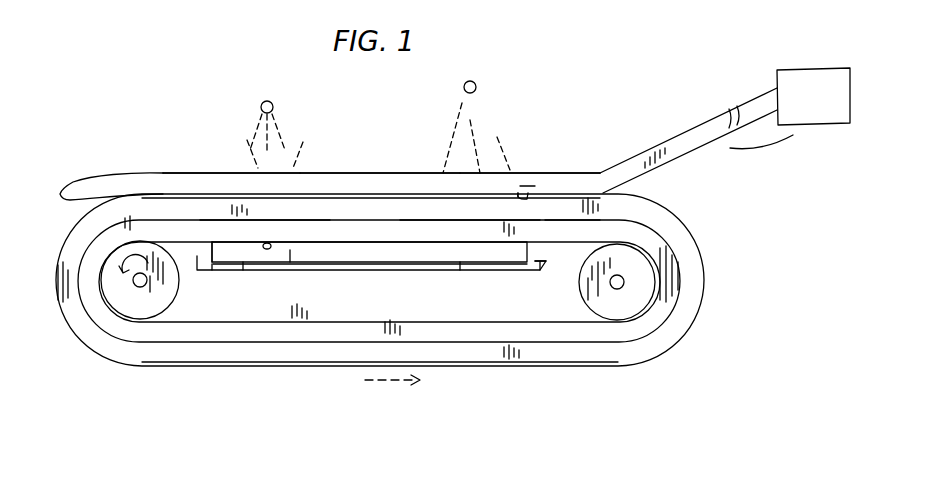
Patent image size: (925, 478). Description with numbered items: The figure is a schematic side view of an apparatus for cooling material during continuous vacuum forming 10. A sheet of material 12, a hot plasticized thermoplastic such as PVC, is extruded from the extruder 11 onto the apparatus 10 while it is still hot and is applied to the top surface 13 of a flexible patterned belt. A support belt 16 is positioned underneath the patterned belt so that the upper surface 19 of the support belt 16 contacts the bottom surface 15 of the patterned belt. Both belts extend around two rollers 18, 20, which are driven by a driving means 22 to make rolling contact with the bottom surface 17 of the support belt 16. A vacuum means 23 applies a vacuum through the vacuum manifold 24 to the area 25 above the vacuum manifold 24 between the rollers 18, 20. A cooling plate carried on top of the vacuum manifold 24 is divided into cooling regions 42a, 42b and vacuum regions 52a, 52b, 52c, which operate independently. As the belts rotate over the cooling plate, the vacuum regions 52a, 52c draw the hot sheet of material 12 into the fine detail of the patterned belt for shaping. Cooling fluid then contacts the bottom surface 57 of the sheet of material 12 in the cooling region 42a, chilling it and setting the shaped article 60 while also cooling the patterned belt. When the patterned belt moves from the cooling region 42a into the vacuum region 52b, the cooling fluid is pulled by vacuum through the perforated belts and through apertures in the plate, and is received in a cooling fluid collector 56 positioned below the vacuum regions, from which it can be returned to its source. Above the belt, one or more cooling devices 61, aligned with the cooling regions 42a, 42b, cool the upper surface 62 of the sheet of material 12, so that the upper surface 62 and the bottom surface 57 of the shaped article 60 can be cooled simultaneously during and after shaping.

The apparatus for cooling material during continuous vacuum forming 10 is at (110, 52).
The extruder 11 is at (803, 70).
The sheet of material 12 is at (683, 127).
The top surface of flexible patterned belt 13 is at (378, 138).
The bottom surface of flexible patterned belt 15 is at (237, 243).
The support belt 16 is at (122, 328).
The bottom surface of support belt 17 is at (198, 257).
The roller 18 is at (152, 305).
The upper surface of support belt 19 is at (557, 218).
The roller 20 is at (640, 300).
The driving means 22 is at (134, 282).
The vacuum means 23 is at (317, 268).
The vacuum manifold 24 is at (245, 262).
The area above vacuum manifold 25 is at (415, 242).
The cooling region 42a is at (455, 218).
The cooling region 42b is at (262, 212).
The vacuum region 52a is at (528, 196).
The vacuum region 52b is at (342, 215).
The vacuum region 52c is at (178, 172).
The cooling fluid collector 56 is at (540, 272).
The bottom surface of sheet of material 57 is at (527, 195).
The shaped article 60 is at (527, 196).
The cooling device 61 is at (257, 93).
The upper surface of sheet of material 62 is at (522, 196).